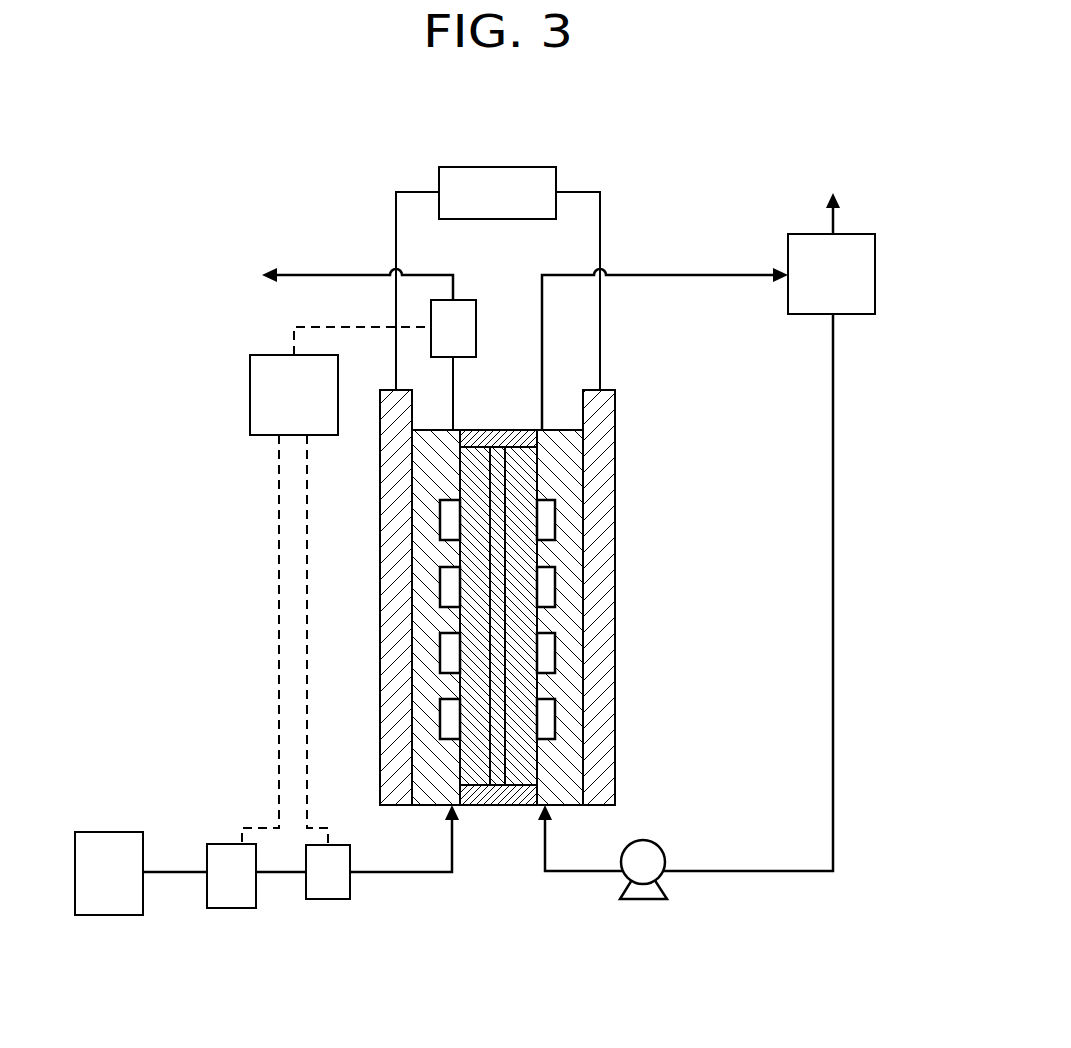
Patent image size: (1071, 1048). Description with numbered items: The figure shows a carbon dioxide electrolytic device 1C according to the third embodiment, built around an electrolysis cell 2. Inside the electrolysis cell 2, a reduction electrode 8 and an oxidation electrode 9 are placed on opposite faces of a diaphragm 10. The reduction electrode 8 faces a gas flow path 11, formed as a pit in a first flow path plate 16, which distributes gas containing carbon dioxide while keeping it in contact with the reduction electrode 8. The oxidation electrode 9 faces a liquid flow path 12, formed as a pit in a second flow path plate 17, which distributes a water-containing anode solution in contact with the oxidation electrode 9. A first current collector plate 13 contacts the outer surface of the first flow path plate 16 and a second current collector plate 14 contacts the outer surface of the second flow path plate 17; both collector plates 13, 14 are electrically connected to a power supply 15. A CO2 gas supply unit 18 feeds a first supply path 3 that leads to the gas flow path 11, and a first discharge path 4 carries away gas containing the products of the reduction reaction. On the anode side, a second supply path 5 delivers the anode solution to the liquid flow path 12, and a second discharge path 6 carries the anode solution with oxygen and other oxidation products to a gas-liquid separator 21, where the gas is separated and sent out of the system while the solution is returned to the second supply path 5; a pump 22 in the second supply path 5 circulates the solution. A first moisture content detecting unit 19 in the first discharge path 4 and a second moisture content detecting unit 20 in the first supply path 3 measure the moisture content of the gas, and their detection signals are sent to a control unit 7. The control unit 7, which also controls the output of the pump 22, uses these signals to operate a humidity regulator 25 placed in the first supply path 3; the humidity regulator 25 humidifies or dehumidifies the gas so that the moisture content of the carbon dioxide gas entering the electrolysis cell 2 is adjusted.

The carbon dioxide electrolytic device 1C is at (645, 137).
The electrolysis cell 2 is at (517, 640).
The first supply path 3 is at (175, 875).
The first discharge path 4 is at (323, 272).
The second supply path 5 is at (778, 871).
The second discharge path 6 is at (693, 272).
The control unit 7 is at (250, 375).
The reduction electrode 8 is at (477, 552).
The oxidation electrode 9 is at (520, 553).
The diaphragm 10 is at (497, 600).
The gas flow path 11 is at (448, 646).
The liquid flow path 12 is at (547, 647).
The first current collector plate 13 is at (398, 740).
The second current collector plate 14 is at (598, 740).
The power supply 15 is at (470, 167).
The first flow path plate 16 is at (437, 478).
The second flow path plate 17 is at (553, 471).
The CO2 gas supply unit 18 is at (116, 832).
The first moisture content detecting unit 19 is at (476, 327).
The second moisture content detecting unit 20 is at (350, 861).
The gas-liquid separator 21 is at (855, 315).
The pump 22 is at (640, 901).
The humidity regulator 25 is at (240, 844).